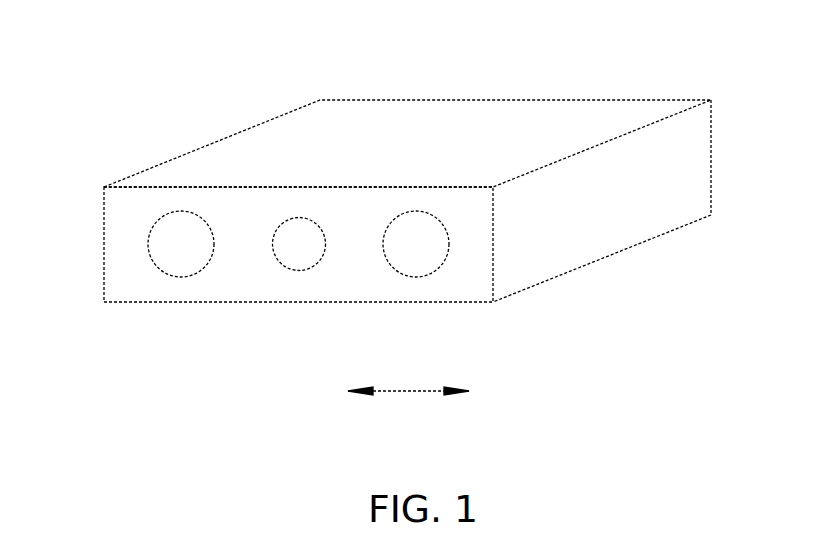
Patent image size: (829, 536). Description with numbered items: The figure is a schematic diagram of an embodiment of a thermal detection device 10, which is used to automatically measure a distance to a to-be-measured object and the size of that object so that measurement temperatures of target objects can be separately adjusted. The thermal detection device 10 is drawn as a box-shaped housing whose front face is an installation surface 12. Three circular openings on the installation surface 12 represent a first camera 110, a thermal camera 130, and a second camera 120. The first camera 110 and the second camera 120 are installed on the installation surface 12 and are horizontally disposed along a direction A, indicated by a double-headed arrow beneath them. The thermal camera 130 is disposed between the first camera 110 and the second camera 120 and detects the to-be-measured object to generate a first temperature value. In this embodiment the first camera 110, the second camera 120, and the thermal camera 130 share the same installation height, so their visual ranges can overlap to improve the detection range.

The thermal detection device 10 is at (204, 63).
The installation surface 12 is at (117, 263).
The first camera 110 is at (160, 270).
The second camera 120 is at (438, 270).
The thermal camera 130 is at (299, 271).
The direction A is at (408, 405).